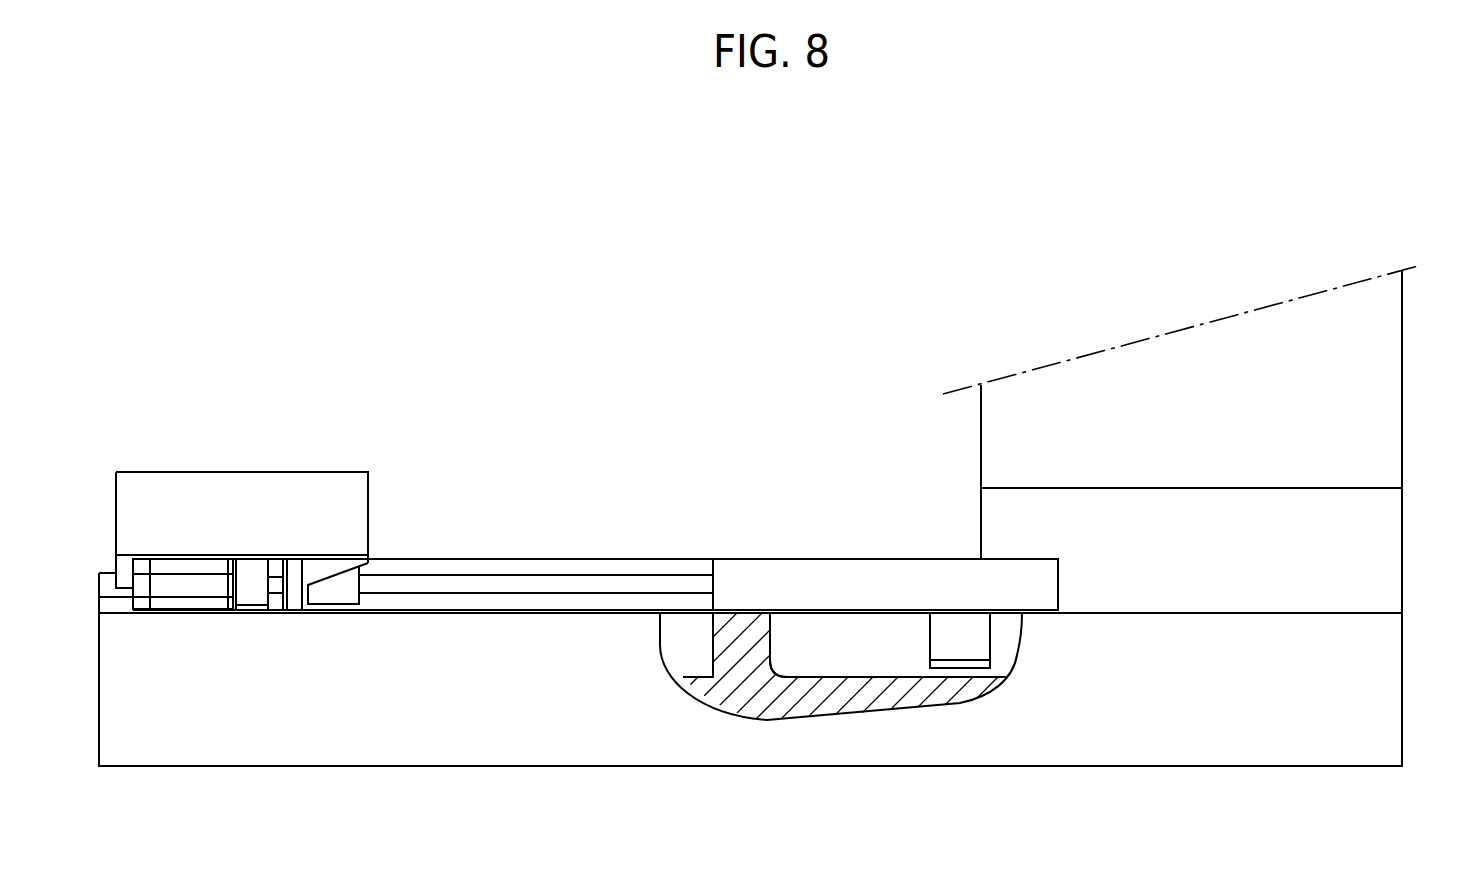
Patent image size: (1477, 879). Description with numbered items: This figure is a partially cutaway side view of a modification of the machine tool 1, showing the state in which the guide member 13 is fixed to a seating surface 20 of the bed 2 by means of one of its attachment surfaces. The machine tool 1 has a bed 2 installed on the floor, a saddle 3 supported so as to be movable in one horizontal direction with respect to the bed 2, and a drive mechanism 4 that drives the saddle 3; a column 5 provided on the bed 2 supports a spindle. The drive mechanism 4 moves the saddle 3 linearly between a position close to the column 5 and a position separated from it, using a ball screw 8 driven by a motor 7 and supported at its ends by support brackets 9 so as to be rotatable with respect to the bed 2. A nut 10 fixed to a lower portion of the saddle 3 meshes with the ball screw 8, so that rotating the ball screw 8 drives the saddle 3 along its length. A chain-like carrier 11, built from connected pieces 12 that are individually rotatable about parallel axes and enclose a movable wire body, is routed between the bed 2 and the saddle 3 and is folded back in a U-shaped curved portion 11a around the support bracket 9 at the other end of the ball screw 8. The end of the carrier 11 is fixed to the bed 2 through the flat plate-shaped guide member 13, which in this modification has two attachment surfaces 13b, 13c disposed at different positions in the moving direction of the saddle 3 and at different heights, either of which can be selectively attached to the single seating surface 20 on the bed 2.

The machine tool 1 is at (625, 270).
The bed 2 is at (1413, 696).
The saddle 3 is at (172, 456).
The drive mechanism 4 is at (461, 490).
The column 5 is at (1402, 377).
The motor 7 is at (183, 603).
The ball screw 8 is at (435, 585).
The support bracket 9 is at (252, 573).
The nut 10 is at (333, 593).
The carrier 11 is at (646, 544).
The U-shaped curved portion 11a is at (1043, 587).
The piece 12 is at (552, 558).
The guide member 13 is at (883, 635).
The attachment surface 13b is at (795, 620).
The attachment surface 13c is at (962, 670).
The seating surface 20 is at (733, 614).